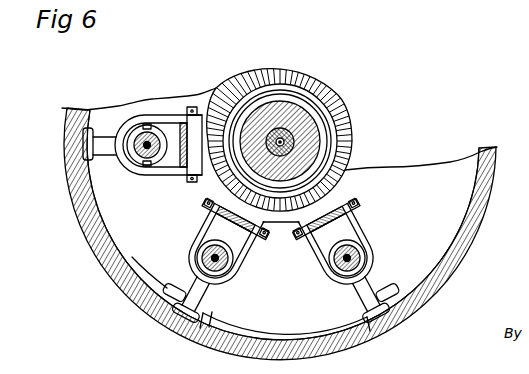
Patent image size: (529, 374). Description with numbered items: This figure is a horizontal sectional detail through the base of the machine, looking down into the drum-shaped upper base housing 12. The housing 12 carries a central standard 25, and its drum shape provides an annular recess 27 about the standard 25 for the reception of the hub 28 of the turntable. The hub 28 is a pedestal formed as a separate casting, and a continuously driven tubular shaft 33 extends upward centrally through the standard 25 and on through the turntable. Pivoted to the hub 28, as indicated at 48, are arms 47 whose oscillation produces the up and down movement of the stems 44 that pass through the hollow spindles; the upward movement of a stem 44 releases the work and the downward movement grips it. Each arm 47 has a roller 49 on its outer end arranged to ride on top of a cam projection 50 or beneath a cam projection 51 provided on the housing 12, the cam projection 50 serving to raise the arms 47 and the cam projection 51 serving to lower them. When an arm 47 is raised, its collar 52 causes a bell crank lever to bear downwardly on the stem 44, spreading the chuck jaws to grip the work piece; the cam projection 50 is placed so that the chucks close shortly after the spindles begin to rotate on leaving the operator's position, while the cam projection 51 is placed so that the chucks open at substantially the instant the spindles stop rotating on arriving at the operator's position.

The upper base housing 12 is at (490, 205).
The standard 25 is at (321, 126).
The annular recess 27 is at (438, 250).
The hub 28 is at (248, 80).
The tubular shaft 33 is at (294, 144).
The stem 44 is at (230, 288).
The arm 47 is at (191, 259).
The pivot 48 is at (357, 205).
The roller 49 is at (176, 297).
The cam projection 50 is at (133, 256).
The cam projection 51 is at (260, 328).
The collar 52 is at (343, 281).